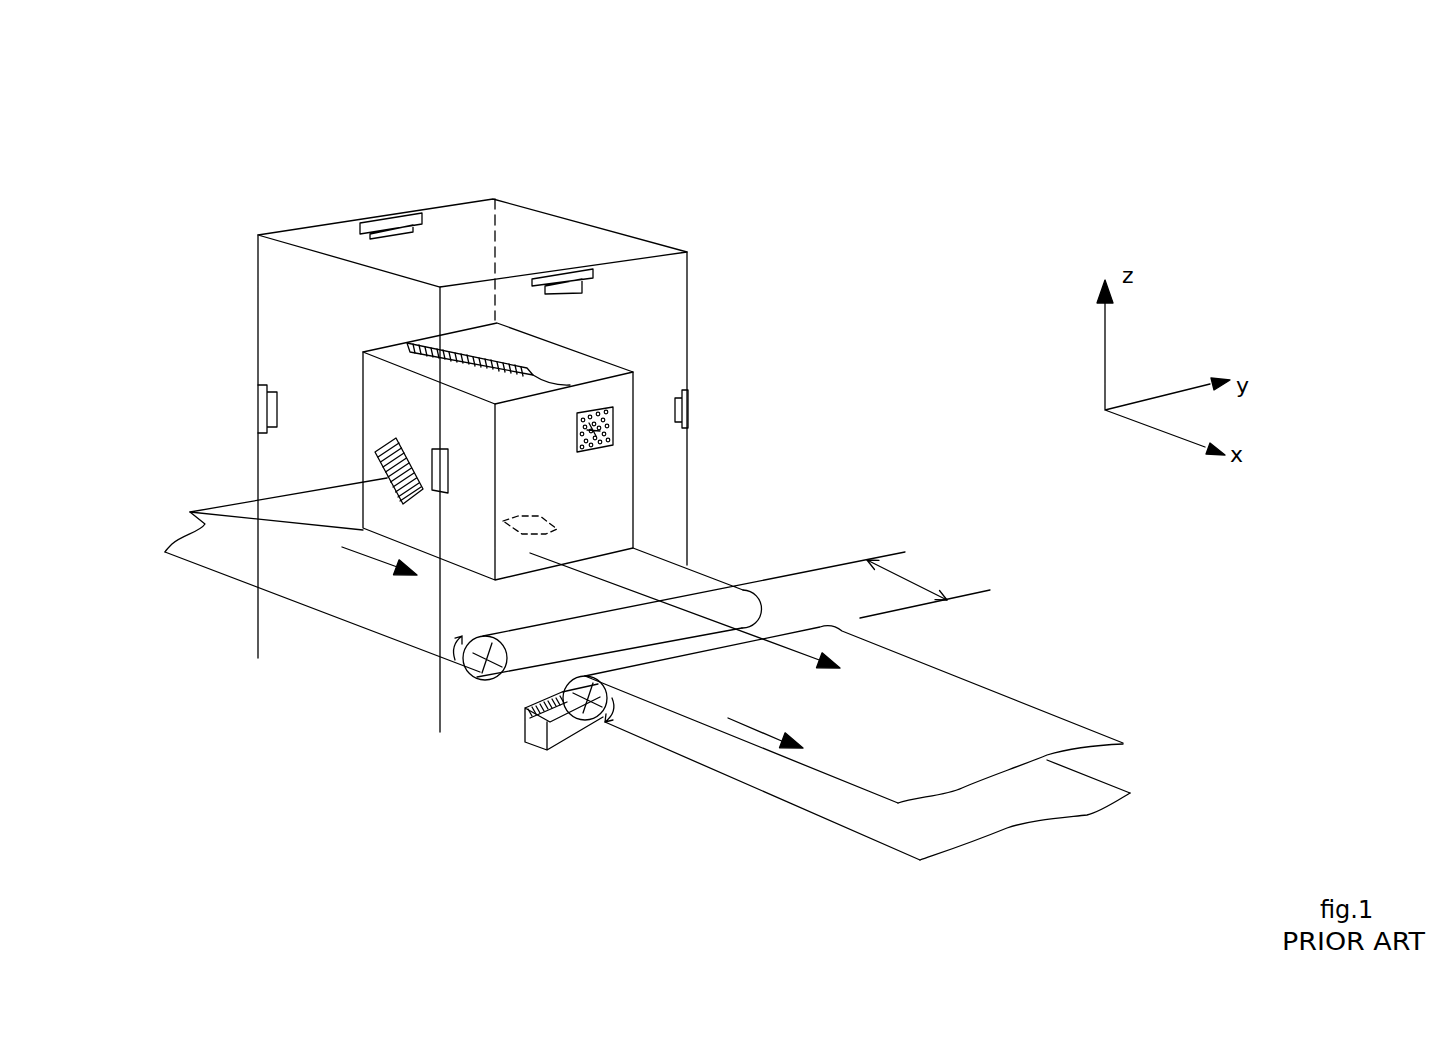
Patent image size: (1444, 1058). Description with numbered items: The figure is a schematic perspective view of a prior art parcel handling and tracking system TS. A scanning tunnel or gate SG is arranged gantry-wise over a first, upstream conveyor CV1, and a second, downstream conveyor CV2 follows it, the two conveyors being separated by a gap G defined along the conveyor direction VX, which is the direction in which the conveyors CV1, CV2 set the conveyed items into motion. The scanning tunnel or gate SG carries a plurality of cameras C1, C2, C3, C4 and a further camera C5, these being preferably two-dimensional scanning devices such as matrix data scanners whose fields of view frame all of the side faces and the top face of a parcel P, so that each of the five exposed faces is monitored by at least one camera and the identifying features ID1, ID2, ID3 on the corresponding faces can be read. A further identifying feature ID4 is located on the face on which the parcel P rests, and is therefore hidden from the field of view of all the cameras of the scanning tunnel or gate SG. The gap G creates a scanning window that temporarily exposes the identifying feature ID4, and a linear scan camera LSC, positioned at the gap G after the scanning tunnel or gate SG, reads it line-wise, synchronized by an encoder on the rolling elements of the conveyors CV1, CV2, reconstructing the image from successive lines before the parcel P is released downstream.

The parcel handling and tracking system TS is at (913, 292).
The scanning tunnel or gate SG is at (556, 212).
The camera C1 is at (387, 220).
The camera C2 is at (565, 292).
The camera C3 is at (681, 410).
The camera C4 is at (448, 471).
The camera 5 (side) C5 is at (273, 422).
The parcel P is at (575, 486).
The identifying feature ID1 is at (363, 462).
The identifying feature ID2 is at (597, 447).
The identifying feature ID3 is at (482, 350).
The identifying feature on hidden face ID4 is at (545, 534).
The first conveyor CV1 is at (690, 583).
The second conveyor CV2 is at (950, 695).
The gap G is at (912, 580).
The conveyor direction VX is at (777, 653).
The linear scan camera LSC is at (527, 733).